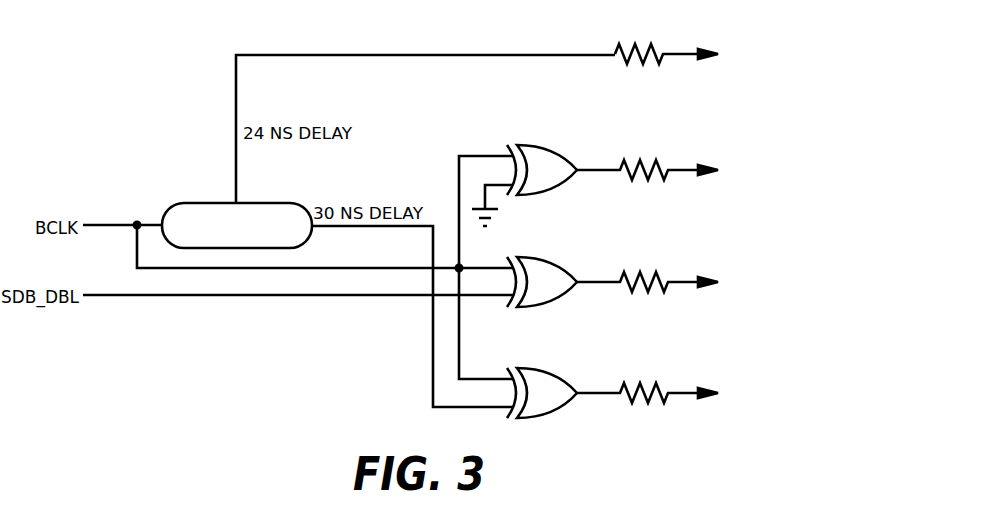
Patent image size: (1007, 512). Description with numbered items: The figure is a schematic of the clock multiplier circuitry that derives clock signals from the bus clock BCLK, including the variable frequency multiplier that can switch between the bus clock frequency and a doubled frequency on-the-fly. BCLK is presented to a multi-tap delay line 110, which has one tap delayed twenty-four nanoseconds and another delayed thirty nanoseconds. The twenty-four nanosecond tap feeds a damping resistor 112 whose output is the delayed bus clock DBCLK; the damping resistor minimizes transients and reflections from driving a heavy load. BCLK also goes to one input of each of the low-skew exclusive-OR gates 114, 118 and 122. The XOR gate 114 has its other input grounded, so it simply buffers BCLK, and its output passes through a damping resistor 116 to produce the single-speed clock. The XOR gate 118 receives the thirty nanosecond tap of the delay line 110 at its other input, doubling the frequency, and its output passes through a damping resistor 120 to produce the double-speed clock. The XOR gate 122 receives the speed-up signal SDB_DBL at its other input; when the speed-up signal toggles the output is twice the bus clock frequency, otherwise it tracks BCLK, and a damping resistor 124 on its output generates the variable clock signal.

The delay line 110 is at (278, 204).
The damping resistor 112 is at (637, 44).
The exclusive-OR gate 114 is at (537, 143).
The damping resistor 116 is at (640, 160).
The exclusive-OR gate 118 is at (537, 366).
The damping resistor 120 is at (640, 383).
The exclusive-OR gate 122 is at (537, 255).
The damping resistor 124 is at (640, 272).